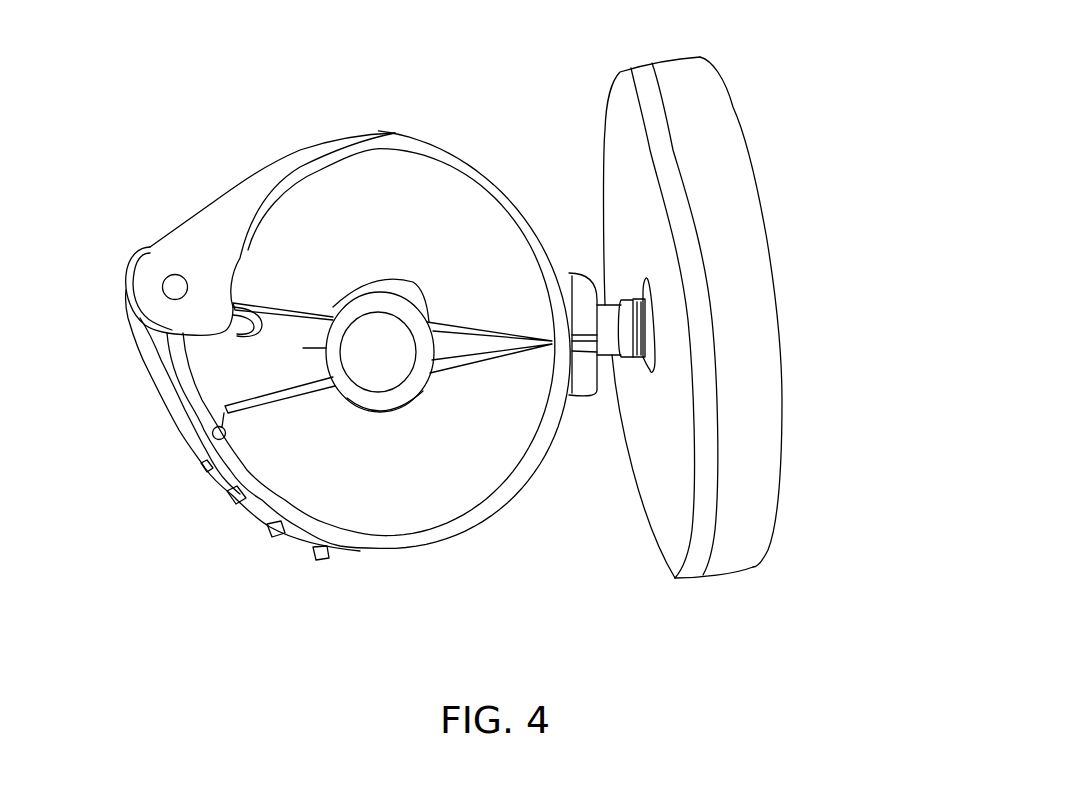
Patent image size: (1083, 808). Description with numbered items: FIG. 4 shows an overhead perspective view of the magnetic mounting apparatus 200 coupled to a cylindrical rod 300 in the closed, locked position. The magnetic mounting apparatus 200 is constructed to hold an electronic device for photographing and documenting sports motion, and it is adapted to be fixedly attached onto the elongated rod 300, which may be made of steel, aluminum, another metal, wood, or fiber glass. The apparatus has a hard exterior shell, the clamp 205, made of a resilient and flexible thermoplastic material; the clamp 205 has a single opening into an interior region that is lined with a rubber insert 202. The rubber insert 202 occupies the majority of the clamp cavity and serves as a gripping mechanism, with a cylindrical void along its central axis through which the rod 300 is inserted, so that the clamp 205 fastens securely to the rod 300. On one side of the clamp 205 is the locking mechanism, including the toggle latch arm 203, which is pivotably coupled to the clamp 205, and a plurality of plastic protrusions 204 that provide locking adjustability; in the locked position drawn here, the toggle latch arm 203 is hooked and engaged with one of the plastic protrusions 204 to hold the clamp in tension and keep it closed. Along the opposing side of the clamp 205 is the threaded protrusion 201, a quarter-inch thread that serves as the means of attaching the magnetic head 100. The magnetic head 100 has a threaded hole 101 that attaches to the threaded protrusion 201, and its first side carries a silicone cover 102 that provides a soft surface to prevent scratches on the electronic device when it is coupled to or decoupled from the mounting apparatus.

The magnetic head 100 is at (752, 50).
The threaded hole 101 is at (645, 368).
The silicone cover 102 is at (782, 337).
The magnetic mounting apparatus 200 is at (266, 120).
The threaded protrusion 201 is at (597, 303).
The rubber insert 202 is at (404, 167).
The toggle latch arm 203 is at (160, 371).
The plastic protrusions 204 is at (320, 553).
The clamp 205 is at (187, 232).
The cylindrical rod 300 is at (328, 350).